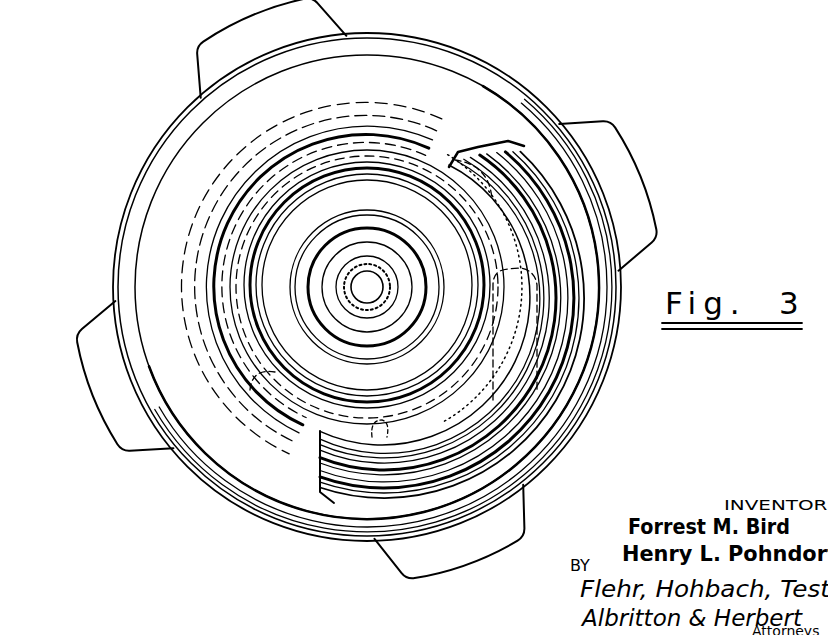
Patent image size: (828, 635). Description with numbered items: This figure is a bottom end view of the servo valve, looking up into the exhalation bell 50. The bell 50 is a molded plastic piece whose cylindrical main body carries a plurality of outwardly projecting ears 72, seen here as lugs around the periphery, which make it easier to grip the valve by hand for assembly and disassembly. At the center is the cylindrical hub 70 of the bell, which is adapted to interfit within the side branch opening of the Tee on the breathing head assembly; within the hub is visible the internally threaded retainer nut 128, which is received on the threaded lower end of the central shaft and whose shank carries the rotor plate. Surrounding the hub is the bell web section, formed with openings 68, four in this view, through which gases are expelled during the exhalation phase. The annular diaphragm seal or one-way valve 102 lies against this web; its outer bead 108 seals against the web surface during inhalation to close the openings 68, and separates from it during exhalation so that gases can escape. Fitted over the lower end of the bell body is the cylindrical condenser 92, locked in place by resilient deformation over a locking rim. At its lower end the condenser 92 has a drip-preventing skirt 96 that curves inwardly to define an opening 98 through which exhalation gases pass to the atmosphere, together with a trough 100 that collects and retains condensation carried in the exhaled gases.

The exhalation bell 50 is at (524, 82).
The ears 72 is at (275, 37).
The condenser 92 is at (124, 237).
The cylindrical hub 70 is at (391, 228).
The retainer nut 128 is at (356, 250).
The openings 68 is at (470, 212).
The drip-preventing skirt 96 is at (306, 443).
The opening 98 is at (268, 378).
The outer bead 108 is at (542, 382).
The trough 100 is at (320, 495).
The diaphragm seal 102 is at (353, 423).